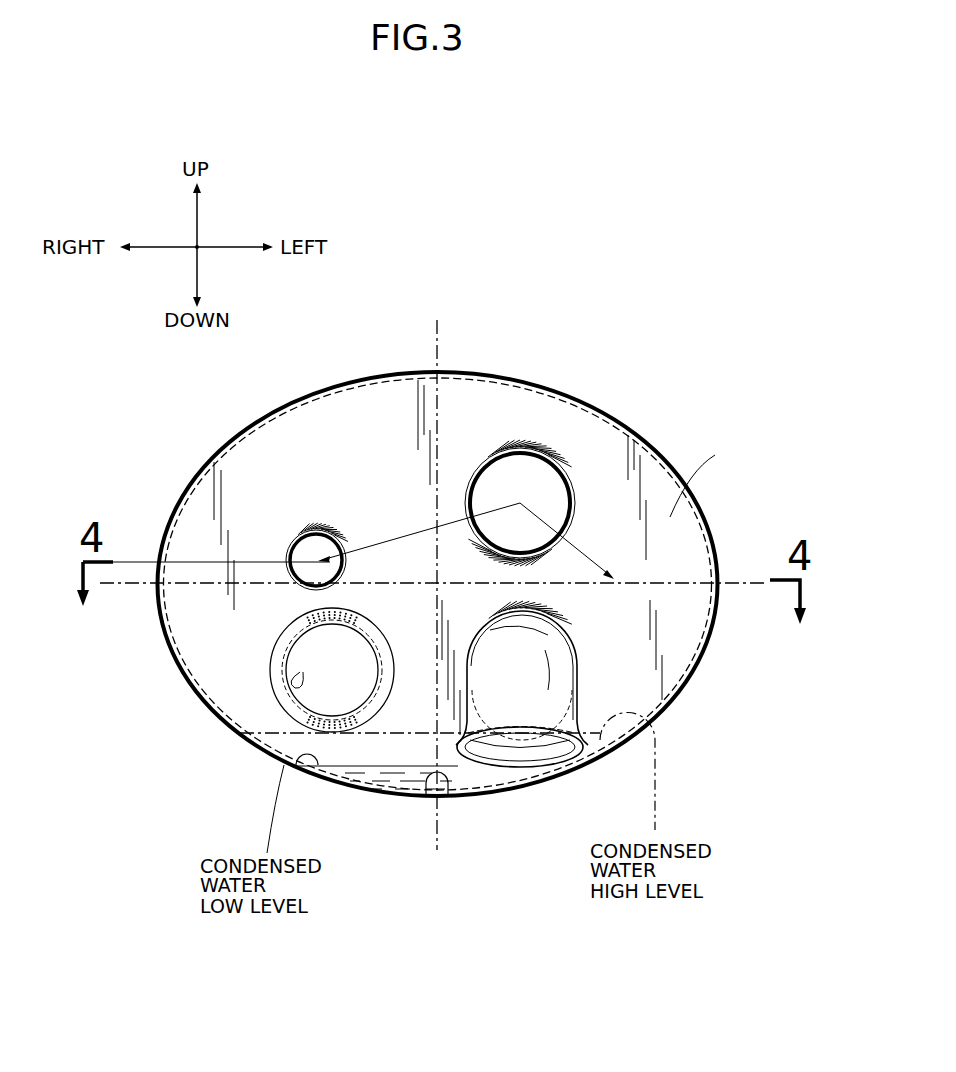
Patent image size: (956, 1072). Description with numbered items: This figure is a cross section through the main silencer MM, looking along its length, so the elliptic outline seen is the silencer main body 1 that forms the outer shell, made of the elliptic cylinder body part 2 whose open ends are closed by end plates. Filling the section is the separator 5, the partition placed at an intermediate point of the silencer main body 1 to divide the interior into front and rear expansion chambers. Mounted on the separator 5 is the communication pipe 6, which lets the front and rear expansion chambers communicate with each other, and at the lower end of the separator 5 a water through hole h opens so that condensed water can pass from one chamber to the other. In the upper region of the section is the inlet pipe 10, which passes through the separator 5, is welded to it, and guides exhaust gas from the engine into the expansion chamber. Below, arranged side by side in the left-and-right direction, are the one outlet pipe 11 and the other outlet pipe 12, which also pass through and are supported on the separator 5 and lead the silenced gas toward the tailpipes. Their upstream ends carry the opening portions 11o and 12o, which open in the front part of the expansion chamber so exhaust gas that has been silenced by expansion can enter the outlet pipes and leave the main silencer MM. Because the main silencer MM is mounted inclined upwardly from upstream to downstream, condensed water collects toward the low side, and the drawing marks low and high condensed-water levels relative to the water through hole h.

The silencer main body 1 is at (578, 400).
The elliptic cylinder body part 2 is at (337, 383).
The separator 5 is at (670, 517).
The communication pipe 6 is at (287, 545).
The inlet pipe 10 is at (481, 470).
The one outlet pipe 11 is at (500, 651).
The opening portion 11o is at (553, 750).
The other outlet pipe 12 is at (373, 629).
The opening portion 12o is at (300, 672).
The water through hole h is at (434, 797).
The main silencer MM is at (500, 366).